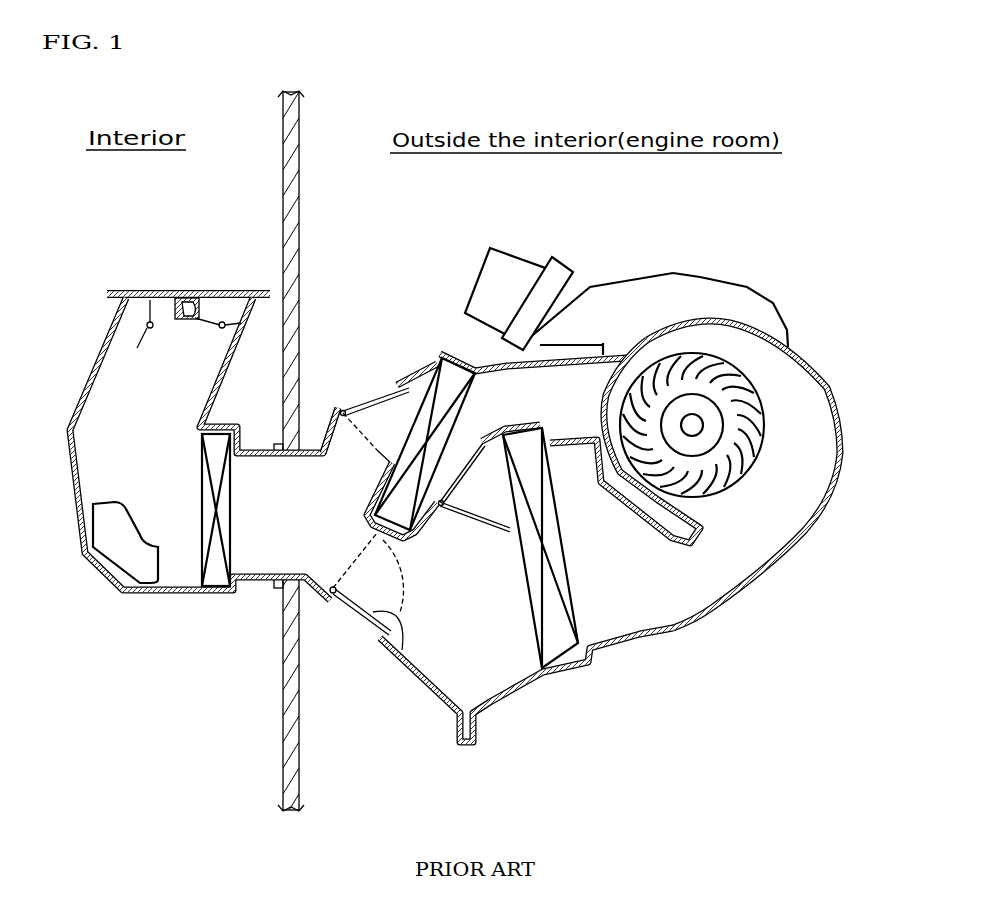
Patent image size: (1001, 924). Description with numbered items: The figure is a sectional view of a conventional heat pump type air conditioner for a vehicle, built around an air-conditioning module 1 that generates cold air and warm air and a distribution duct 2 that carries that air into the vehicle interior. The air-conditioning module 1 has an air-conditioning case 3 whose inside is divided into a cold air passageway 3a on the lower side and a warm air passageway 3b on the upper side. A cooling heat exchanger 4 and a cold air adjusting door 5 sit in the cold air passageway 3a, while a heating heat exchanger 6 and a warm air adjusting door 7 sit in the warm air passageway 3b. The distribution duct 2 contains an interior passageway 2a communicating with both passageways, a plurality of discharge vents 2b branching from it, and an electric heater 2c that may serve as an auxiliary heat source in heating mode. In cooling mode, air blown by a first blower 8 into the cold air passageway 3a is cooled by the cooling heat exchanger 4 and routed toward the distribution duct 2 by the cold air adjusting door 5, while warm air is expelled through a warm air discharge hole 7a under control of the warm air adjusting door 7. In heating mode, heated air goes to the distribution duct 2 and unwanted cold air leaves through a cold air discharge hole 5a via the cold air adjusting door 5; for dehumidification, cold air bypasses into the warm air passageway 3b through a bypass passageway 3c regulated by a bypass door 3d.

The air-conditioning module 1 is at (438, 345).
The distribution duct 2 is at (82, 334).
The interior passageway 2a is at (146, 487).
The discharge vents 2b is at (166, 312).
The electric heater 2c is at (218, 570).
The air-conditioning case 3 is at (650, 655).
The cold air passageway 3a is at (658, 598).
The warm air passageway 3b is at (523, 401).
The bypass passageway 3c is at (449, 470).
The bypass door 3d is at (453, 475).
The cooling heat exchanger 4 is at (575, 645).
The cold air adjusting door 5 is at (402, 650).
The cold air discharge hole 5a is at (365, 626).
The heating heat exchanger 6 is at (412, 425).
The warm air adjusting door 7 is at (356, 405).
The warm air discharge hole 7a is at (387, 395).
The first blower 8 is at (723, 483).